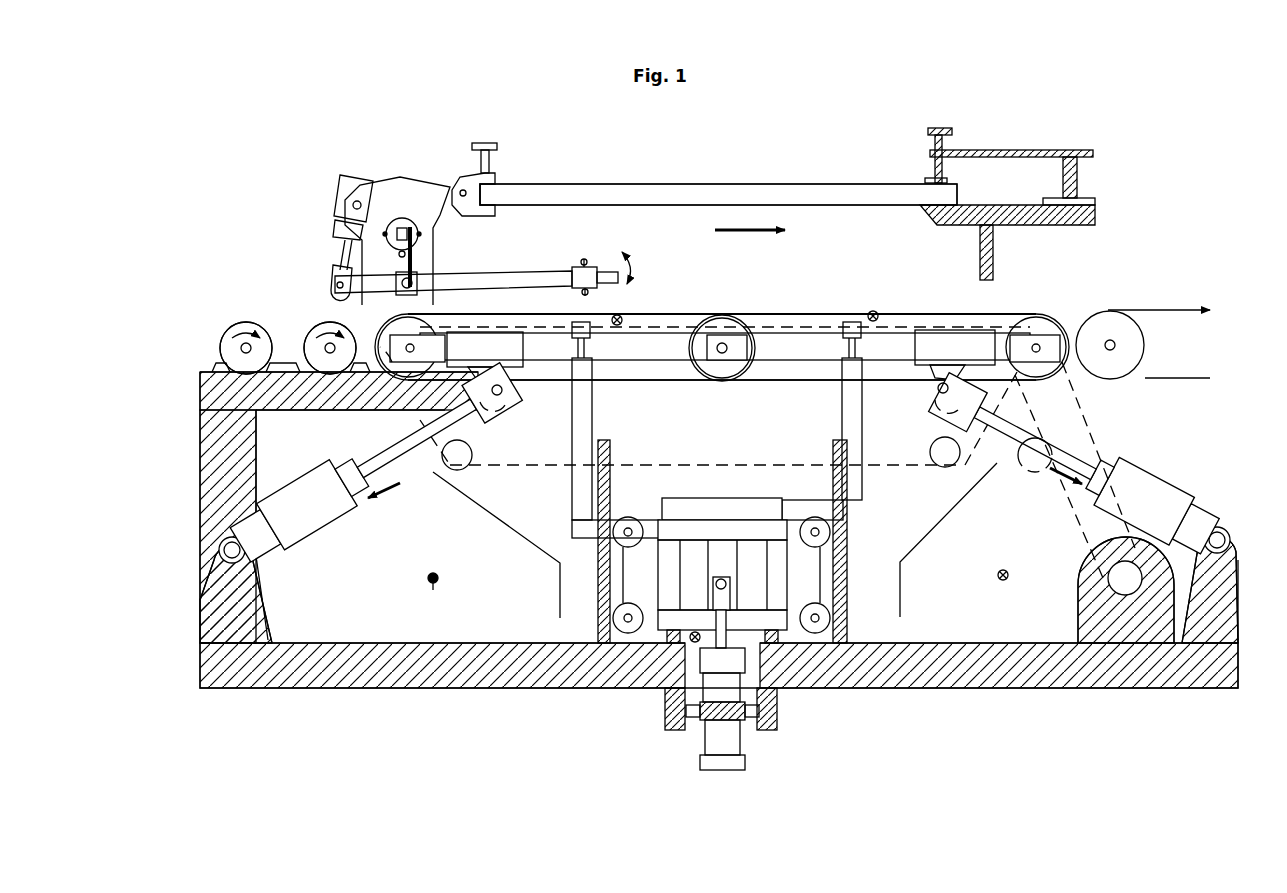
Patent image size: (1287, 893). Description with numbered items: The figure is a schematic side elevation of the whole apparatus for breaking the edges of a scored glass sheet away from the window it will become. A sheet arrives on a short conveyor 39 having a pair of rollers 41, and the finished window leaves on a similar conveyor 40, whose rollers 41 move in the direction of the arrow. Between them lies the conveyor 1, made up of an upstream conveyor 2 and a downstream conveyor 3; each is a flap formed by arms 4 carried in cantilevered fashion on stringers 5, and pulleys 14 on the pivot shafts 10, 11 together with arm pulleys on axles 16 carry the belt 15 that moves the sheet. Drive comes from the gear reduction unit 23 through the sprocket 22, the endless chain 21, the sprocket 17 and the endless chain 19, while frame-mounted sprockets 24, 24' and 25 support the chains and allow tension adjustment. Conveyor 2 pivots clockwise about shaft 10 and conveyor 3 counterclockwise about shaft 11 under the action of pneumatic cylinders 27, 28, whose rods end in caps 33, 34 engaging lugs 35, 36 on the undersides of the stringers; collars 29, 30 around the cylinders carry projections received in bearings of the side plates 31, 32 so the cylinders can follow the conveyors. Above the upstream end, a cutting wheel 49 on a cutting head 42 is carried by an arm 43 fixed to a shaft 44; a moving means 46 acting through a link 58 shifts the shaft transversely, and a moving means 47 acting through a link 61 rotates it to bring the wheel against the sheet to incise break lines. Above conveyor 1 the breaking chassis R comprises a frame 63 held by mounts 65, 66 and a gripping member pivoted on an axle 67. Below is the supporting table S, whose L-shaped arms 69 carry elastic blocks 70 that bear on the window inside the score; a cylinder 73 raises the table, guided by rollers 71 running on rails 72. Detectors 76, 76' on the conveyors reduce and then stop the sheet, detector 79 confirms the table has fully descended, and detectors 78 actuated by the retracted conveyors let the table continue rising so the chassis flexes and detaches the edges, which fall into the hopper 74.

The conveyor 1 is at (800, 313).
The upstream conveyor 2 is at (670, 343).
The downstream conveyor 3 is at (900, 313).
The arms 4 is at (667, 317).
The stringers 5 is at (937, 353).
The shaft 10 is at (407, 353).
The shaft 11 is at (1043, 340).
The pulley 14 is at (723, 370).
The belt 15 is at (820, 312).
The axle 16 is at (707, 357).
The sprocket 17 is at (492, 414).
The endless chain 19 is at (527, 467).
The endless chain 21 is at (1050, 507).
The sprocket 22 is at (1125, 596).
The gear reduction unit 23 is at (1097, 600).
The sprocket 24 is at (435, 474).
The sprocket 24' is at (915, 470).
The sprocket 25 is at (1030, 465).
The cylinder 27 is at (282, 540).
The cylinder 28 is at (1173, 503).
The collar 29 is at (255, 557).
The collar 30 is at (1200, 520).
The side plate 31 is at (228, 605).
The side plate 32 is at (1218, 580).
The cap 33 is at (500, 405).
The cap 34 is at (958, 403).
The lug 35 is at (515, 378).
The lug 36 is at (930, 363).
The conveyor 39 is at (280, 277).
The conveyor 40 is at (1173, 328).
The rollers 41 is at (312, 327).
The cutting head 42 is at (585, 266).
The arm 43 is at (487, 273).
The shaft 44 is at (413, 232).
The moving means 46 is at (398, 220).
The moving means 47 is at (340, 193).
The cutting wheel 49 is at (582, 295).
The link 58 is at (400, 257).
The link 61 is at (367, 282).
The frame 63 is at (617, 190).
The mount 65 is at (410, 195).
The mount 66 is at (1005, 240).
The axle 67 is at (465, 185).
The arms 69 is at (585, 427).
The elastic block 70 is at (588, 337).
The rollers 71 is at (623, 632).
The rails 72 is at (602, 600).
The cylinder 73 is at (732, 733).
The hopper 74 is at (903, 580).
The detector 76 is at (641, 207).
The detector 76' is at (858, 205).
The detectors 78 is at (433, 592).
The detector 79 is at (690, 643).
The breaking chassis R is at (753, 187).
The supporting table S is at (757, 583).